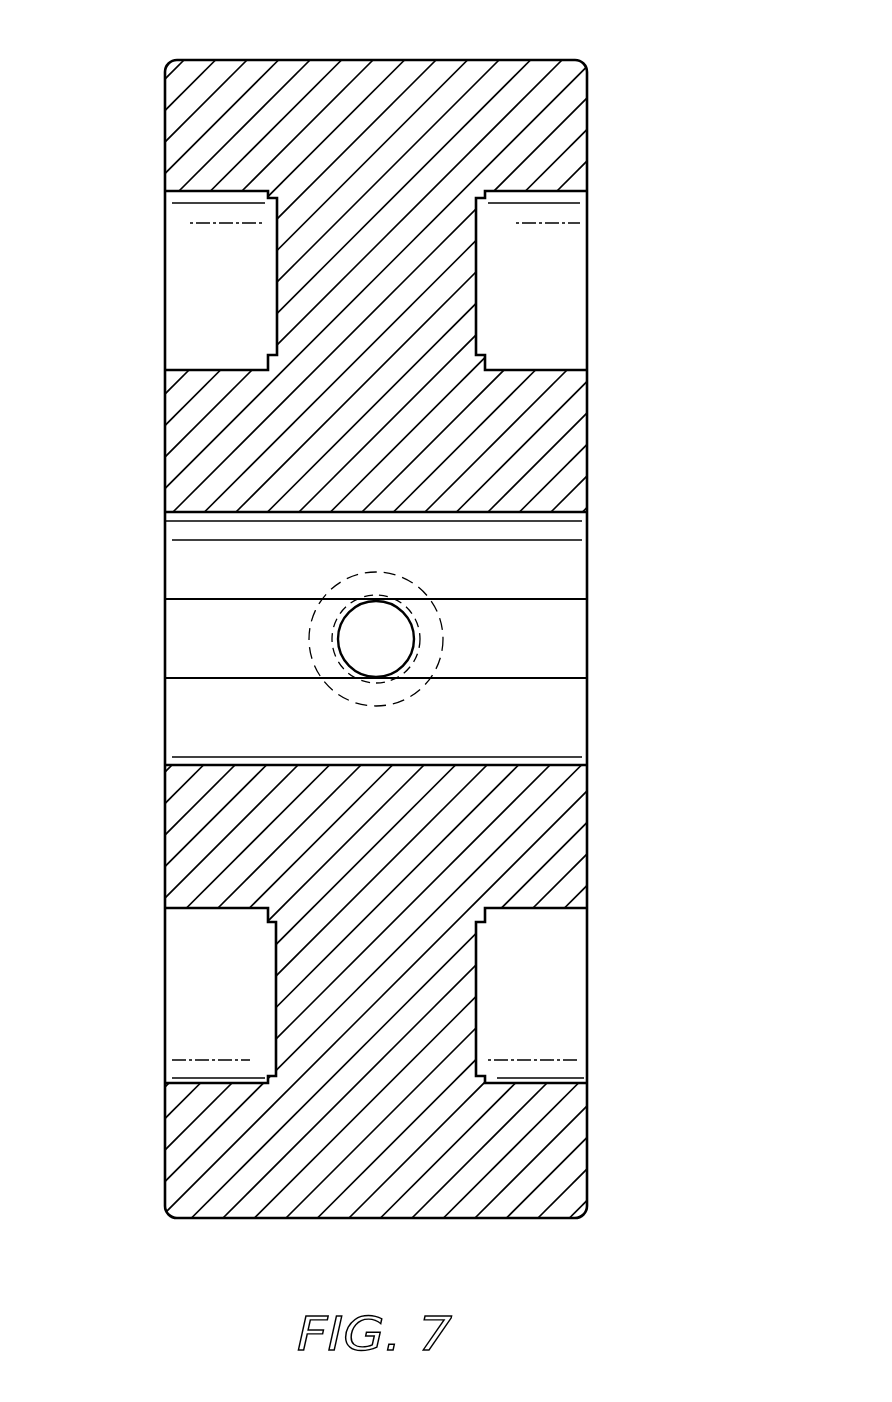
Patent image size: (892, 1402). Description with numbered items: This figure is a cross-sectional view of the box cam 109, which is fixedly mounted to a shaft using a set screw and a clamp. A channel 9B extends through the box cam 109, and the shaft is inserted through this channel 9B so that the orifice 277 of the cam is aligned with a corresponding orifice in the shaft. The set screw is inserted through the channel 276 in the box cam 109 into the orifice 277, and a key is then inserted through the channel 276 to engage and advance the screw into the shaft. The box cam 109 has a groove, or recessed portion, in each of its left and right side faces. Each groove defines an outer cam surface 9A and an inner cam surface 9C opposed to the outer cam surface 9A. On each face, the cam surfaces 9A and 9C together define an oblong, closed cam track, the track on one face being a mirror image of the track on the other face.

The box cam 109 is at (533, 59).
The outer cam surface 9A is at (195, 195).
The channel 9B is at (205, 763).
The inner cam surface 9C is at (197, 366).
The orifice 277 is at (413, 650).
The channel 276 is at (425, 686).